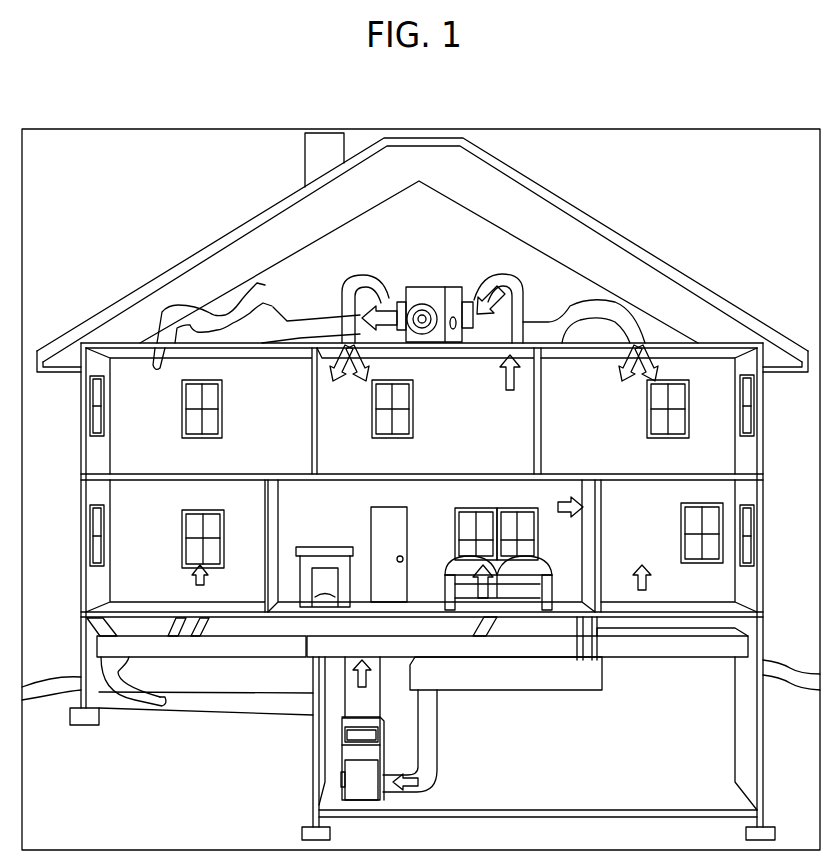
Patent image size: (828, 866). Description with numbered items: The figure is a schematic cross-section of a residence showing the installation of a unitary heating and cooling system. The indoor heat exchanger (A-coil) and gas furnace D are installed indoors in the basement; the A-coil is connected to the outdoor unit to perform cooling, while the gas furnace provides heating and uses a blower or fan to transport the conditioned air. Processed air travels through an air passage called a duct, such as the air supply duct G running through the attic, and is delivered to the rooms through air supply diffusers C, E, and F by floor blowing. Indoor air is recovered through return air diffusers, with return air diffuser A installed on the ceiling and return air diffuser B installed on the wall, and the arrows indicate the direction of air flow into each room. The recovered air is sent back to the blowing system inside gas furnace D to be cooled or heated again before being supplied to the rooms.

The return air diffuser A is at (493, 356).
The return air diffuser B is at (588, 508).
The air supply diffuser C is at (498, 583).
The indoor heat exchanger and gas furnace D is at (379, 758).
The air supply diffuser E is at (133, 681).
The air supply diffuser F is at (84, 534).
The air supply duct G is at (256, 324).